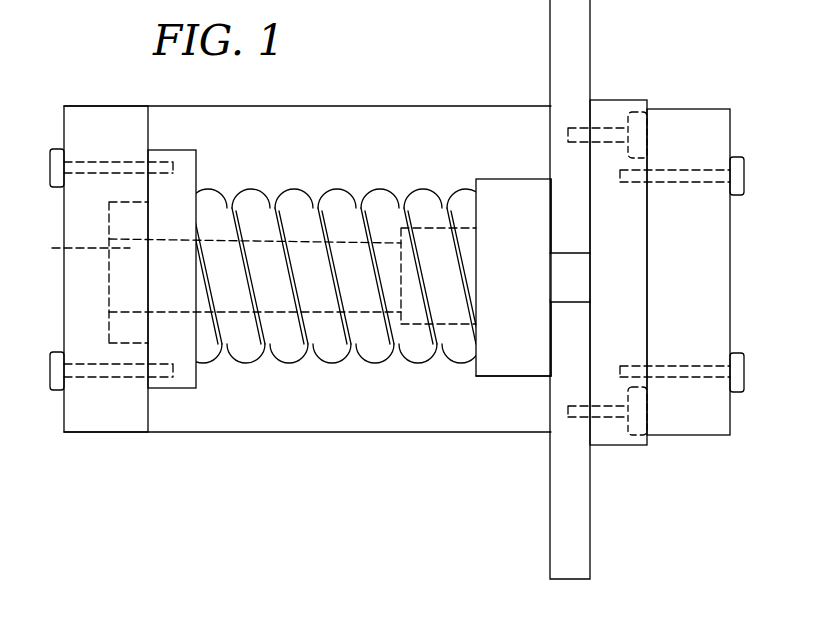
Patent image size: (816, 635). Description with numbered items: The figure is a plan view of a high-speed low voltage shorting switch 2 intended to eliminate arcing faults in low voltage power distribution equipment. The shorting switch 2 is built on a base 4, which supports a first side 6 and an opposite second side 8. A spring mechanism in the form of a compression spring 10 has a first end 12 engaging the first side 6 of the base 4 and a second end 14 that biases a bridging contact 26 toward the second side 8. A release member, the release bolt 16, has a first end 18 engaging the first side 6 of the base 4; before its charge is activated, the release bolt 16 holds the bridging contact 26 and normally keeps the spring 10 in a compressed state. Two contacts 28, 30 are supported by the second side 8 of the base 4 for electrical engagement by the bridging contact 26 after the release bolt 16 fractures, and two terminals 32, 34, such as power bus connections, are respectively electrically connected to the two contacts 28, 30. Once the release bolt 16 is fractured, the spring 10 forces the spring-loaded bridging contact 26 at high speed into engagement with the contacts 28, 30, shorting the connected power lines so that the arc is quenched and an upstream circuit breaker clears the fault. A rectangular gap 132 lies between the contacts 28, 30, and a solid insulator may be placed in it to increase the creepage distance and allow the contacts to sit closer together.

The shorting switch 2 is at (375, 554).
The base 4 is at (330, 418).
The first side 6 is at (133, 440).
The second side 8 is at (688, 453).
The compression spring 10 is at (285, 365).
The first end 12 is at (194, 293).
The second end 14 is at (477, 197).
The release bolt 16 is at (255, 242).
The first end 18 is at (78, 249).
The bridging contact 26 is at (496, 381).
The contact 28 is at (551, 308).
The contact 30 is at (551, 247).
The terminal 32 is at (547, 517).
The terminal 34 is at (548, 28).
The rectangular gap 132 is at (580, 279).